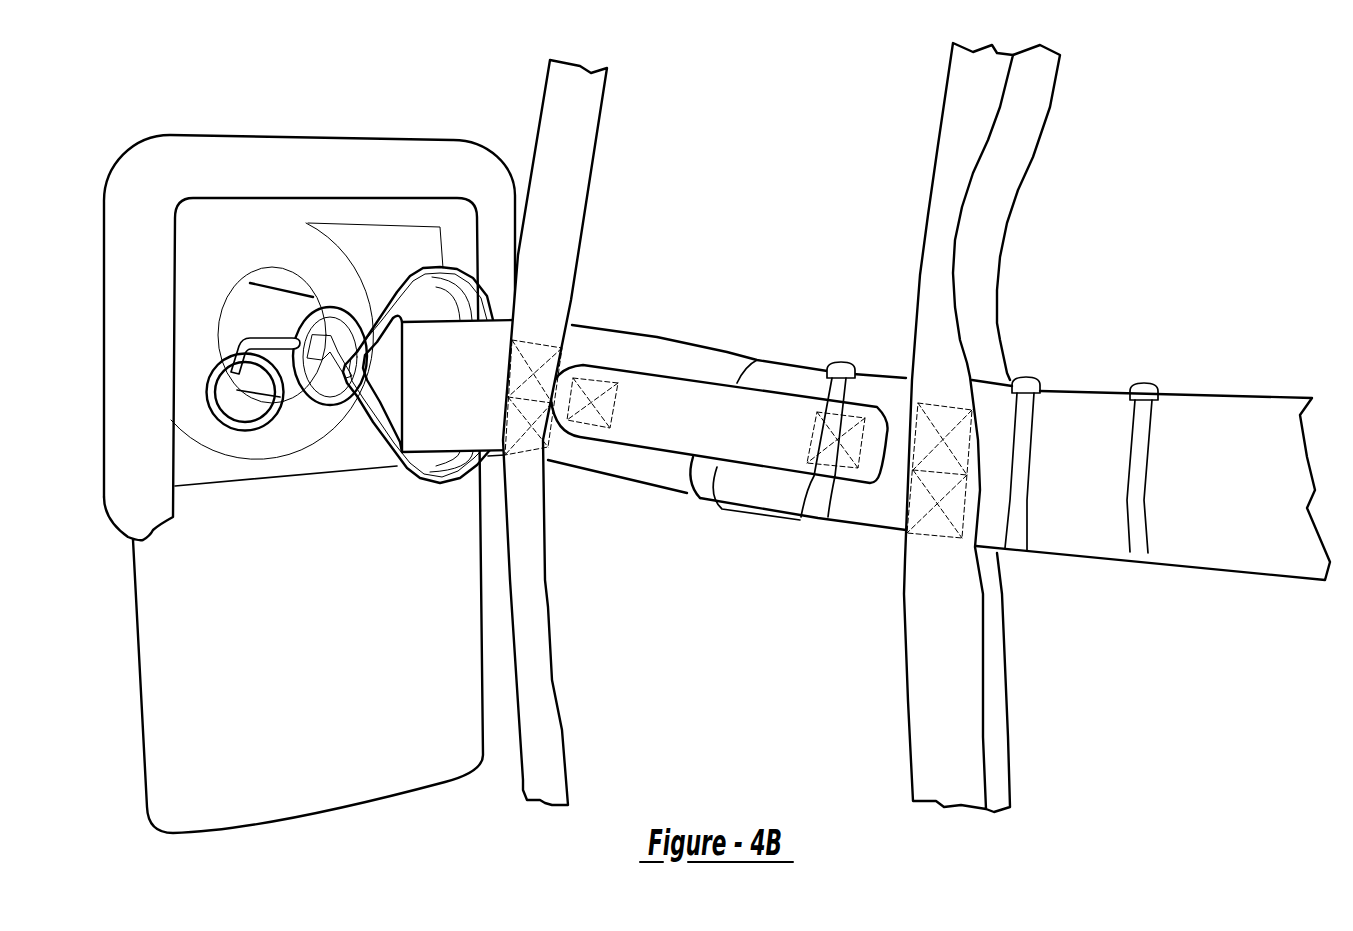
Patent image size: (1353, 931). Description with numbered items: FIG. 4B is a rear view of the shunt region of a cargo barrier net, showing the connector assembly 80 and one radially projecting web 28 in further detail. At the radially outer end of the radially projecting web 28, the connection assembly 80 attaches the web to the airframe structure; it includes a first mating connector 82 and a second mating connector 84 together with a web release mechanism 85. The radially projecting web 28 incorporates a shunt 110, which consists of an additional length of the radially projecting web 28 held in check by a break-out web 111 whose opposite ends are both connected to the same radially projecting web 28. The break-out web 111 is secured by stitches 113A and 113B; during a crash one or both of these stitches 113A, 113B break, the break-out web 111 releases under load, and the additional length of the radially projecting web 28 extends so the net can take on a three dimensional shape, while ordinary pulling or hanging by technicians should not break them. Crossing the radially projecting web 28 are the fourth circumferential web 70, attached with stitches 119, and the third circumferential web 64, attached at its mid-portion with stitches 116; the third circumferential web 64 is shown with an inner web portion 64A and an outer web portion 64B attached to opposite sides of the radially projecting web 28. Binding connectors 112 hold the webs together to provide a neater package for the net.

The radially projecting web 28 is at (1076, 562).
The third circumferential web 64 is at (1034, 427).
The inner web portion 64A is at (944, 716).
The outer web portion 64B is at (994, 673).
The fourth circumferential web 70 is at (550, 608).
The connection assembly 80 is at (350, 429).
The first mating connector 82 is at (367, 437).
The second mating connector 84 is at (323, 403).
The web release mechanism 85 is at (236, 428).
The shunt 110 is at (794, 546).
The break-out web 111 is at (689, 460).
The binding connector 112 is at (838, 362).
The stitches 113A is at (598, 378).
The stitches 113B is at (865, 445).
The stitches 116 is at (935, 538).
The stitches 119 is at (523, 458).